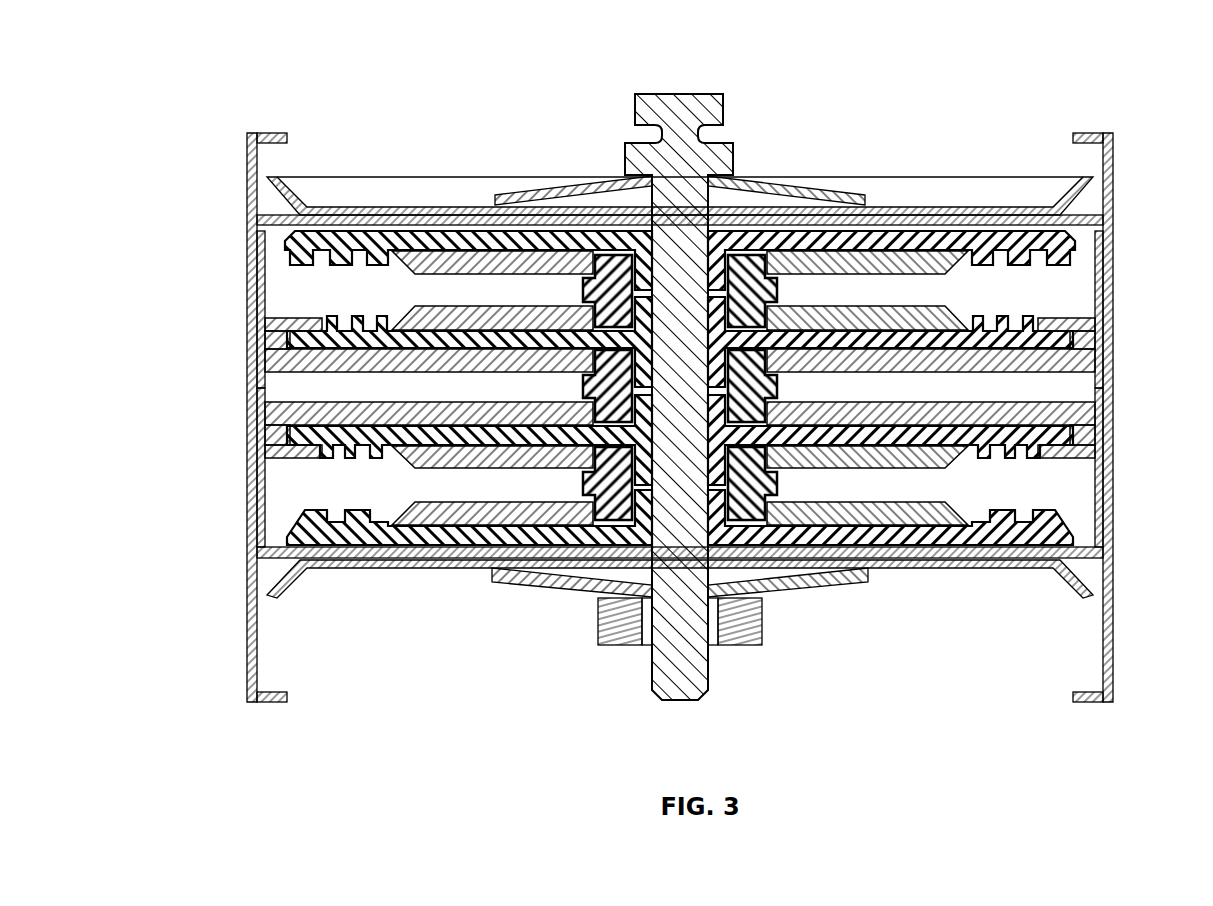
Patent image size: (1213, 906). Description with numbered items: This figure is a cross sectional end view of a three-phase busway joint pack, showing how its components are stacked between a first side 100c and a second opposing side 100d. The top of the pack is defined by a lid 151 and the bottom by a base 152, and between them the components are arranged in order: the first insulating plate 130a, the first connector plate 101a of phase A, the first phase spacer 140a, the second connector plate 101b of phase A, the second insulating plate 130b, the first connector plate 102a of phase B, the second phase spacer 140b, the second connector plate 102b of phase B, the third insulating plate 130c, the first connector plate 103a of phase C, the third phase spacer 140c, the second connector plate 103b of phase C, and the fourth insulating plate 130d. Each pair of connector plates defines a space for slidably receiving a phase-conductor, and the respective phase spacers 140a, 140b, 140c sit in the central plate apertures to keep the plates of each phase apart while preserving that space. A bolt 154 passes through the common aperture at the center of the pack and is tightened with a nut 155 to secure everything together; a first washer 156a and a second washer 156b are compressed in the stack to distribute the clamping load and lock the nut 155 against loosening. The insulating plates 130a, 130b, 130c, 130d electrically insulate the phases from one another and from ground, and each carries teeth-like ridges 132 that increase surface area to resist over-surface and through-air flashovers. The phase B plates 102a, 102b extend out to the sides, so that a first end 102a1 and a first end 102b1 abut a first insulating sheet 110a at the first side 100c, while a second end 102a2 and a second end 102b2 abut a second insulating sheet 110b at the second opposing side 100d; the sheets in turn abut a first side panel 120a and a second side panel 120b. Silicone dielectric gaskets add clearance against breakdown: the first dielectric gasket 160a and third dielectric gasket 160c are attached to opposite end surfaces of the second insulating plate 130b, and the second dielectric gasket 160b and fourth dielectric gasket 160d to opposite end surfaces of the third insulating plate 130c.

The first side 100c is at (241, 547).
The second opposing side 100d is at (1112, 200).
The first phase connector plate 101a is at (787, 268).
The second phase connector plate 101b is at (880, 318).
The first phase connector plate 102a is at (395, 362).
The first end 102a1 is at (276, 352).
The second end 102a2 is at (1080, 357).
The second phase connector plate 102b is at (888, 412).
The first end 102b1 is at (276, 415).
The second end 102b2 is at (1085, 424).
The first phase connector plate 103a is at (433, 458).
The second phase connector plate 103b is at (545, 505).
The first insulating sheet 110a is at (268, 320).
The second insulating sheet 110b is at (1093, 298).
The first side panel 120a is at (262, 134).
The second side panel 120b is at (1094, 134).
The first insulating plate 130a is at (1078, 248).
The second insulating plate 130b is at (1076, 337).
The third insulating plate 130c is at (1055, 450).
The fourth insulating plate 130d is at (1075, 537).
The teeth-like ridges 132 is at (320, 266).
The first phase spacer 140a is at (590, 290).
The second phase spacer 140b is at (768, 400).
The third phase spacer 140c is at (768, 480).
The lid 151 is at (345, 188).
The base 152 is at (305, 590).
The bolt 154 is at (687, 102).
The nut 155 is at (740, 622).
The first washer 156a is at (560, 192).
The second washer 156b is at (530, 580).
The first dielectric gasket 160a is at (266, 320).
The second dielectric gasket 160b is at (262, 470).
The third dielectric gasket 160c is at (1101, 320).
The fourth dielectric gasket 160d is at (1101, 455).